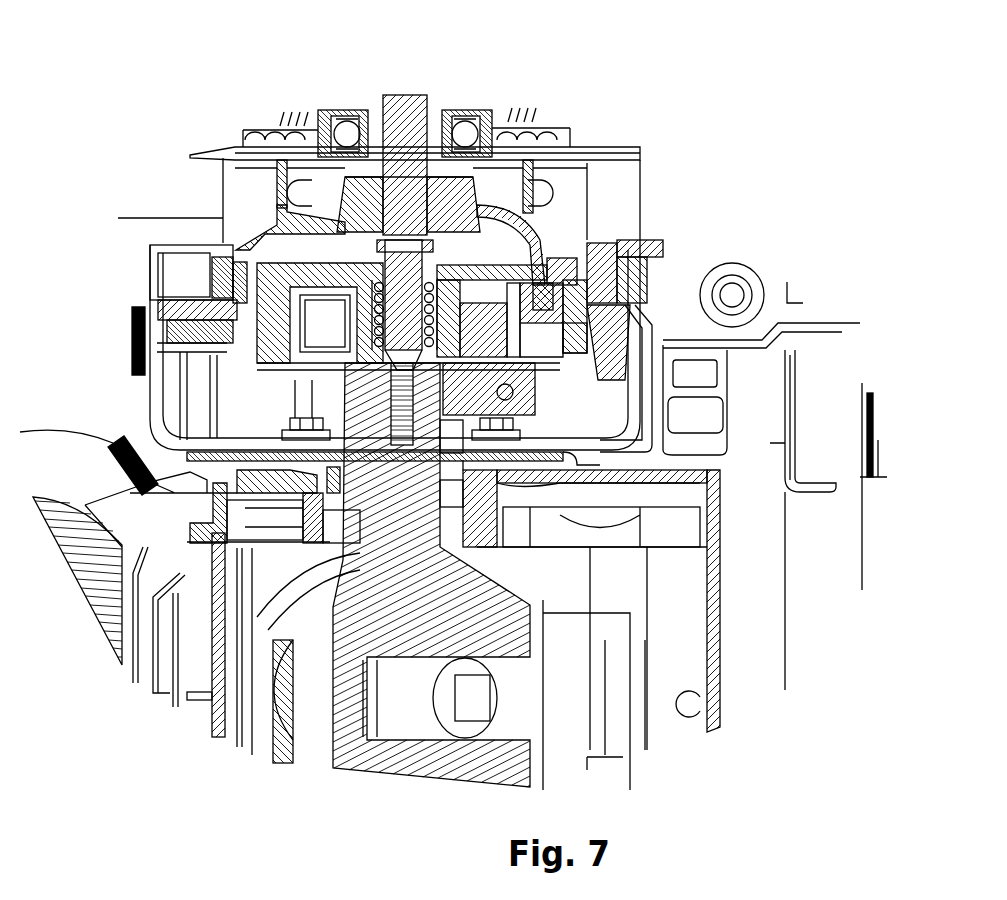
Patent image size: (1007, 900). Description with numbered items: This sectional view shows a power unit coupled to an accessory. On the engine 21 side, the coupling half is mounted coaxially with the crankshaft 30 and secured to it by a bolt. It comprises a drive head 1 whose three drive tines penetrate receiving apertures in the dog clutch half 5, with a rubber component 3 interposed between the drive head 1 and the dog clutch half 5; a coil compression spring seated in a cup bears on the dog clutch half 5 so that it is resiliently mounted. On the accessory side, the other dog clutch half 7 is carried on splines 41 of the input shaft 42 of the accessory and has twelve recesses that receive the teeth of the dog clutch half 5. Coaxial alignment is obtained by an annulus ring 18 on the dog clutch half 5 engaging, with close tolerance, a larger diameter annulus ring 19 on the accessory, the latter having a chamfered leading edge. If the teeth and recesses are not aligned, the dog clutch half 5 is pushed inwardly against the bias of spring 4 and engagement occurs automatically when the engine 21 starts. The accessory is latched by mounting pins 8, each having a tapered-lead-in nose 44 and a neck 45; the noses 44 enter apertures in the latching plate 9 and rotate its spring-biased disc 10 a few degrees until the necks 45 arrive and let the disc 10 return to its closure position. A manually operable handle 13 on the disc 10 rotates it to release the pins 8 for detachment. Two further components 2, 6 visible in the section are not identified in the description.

The drive head 1 is at (550, 300).
The intermediate block 2 is at (523, 262).
The rubber component 3 is at (463, 265).
The spring 4 is at (448, 292).
The dog clutch half 5 is at (330, 265).
The inner cage 6 is at (350, 285).
The dog clutch half 7 is at (283, 250).
The mounting pin 8 is at (617, 303).
The latching plate 9 is at (182, 300).
The rotatable disc 10 is at (627, 333).
The manually operable handle 13 is at (128, 337).
The annulus ring 18 is at (240, 270).
The annulus ring 19 is at (213, 287).
The engine 21 is at (220, 748).
The crankshaft 30 is at (380, 598).
The splines 41 is at (452, 108).
The input shaft 42 is at (408, 128).
The tapered-lead-in nose 44 is at (620, 390).
The neck 45 is at (617, 337).